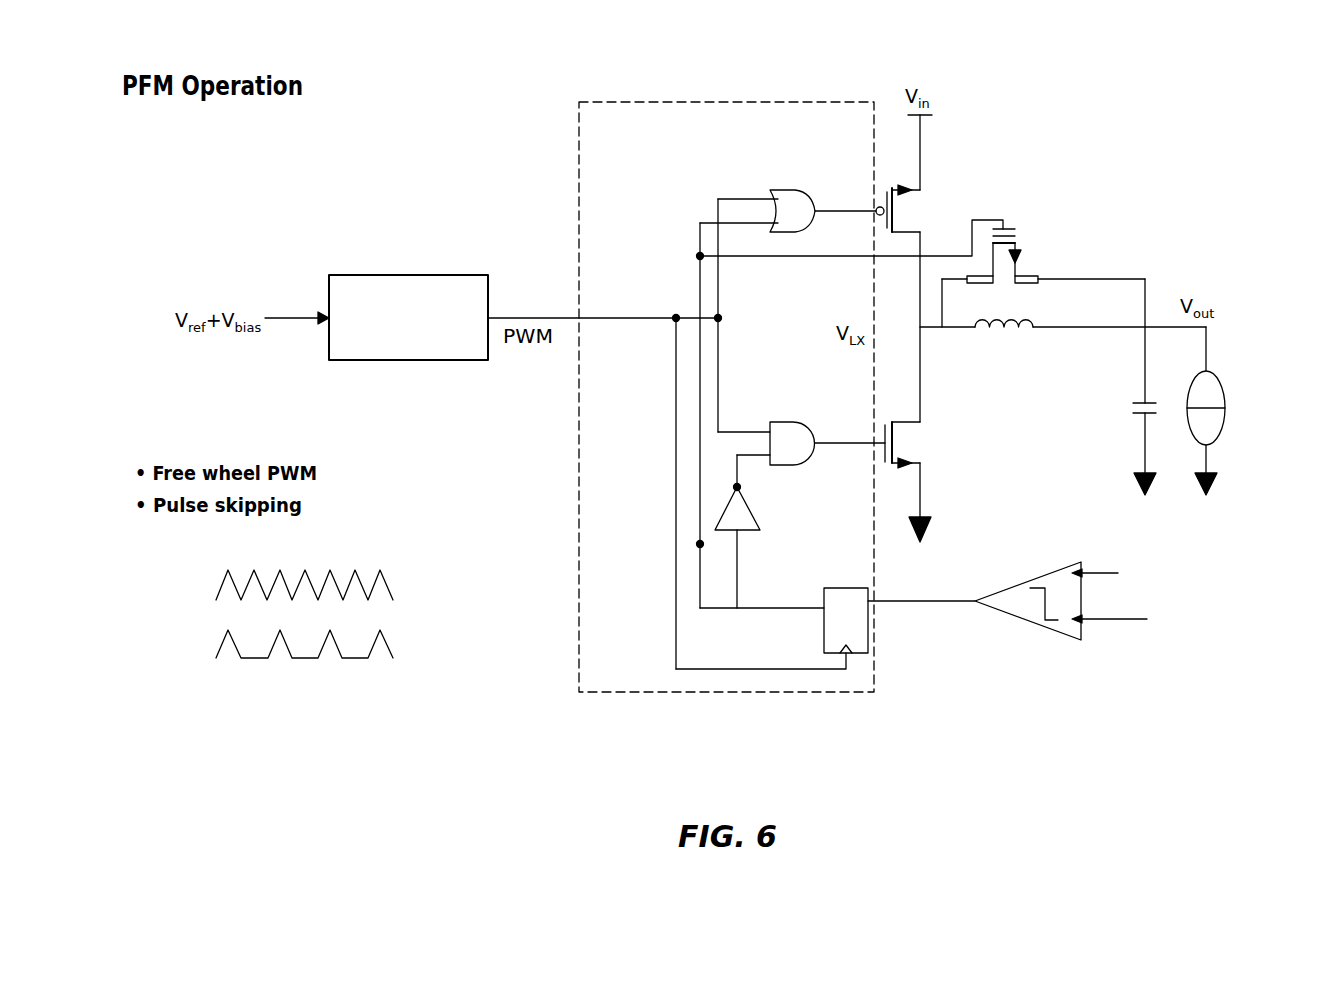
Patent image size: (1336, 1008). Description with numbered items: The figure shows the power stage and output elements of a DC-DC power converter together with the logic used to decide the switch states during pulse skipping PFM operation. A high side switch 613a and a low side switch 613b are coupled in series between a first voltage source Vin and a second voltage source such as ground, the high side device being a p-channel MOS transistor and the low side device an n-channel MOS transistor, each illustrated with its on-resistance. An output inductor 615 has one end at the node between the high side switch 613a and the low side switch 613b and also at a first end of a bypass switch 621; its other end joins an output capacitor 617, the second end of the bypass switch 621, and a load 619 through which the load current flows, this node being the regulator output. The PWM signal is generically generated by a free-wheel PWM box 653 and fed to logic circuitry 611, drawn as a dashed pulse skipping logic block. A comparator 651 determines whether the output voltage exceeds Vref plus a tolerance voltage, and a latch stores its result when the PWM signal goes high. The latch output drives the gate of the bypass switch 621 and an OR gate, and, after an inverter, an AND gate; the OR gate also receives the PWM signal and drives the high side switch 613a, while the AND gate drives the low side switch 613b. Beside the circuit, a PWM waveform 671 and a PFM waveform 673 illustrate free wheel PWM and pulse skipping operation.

The free-wheel PWM box 653 is at (408, 275).
The logic circuitry 611 is at (733, 693).
The high side switch 613a is at (920, 179).
The low side switch 613b is at (920, 423).
The bypass switch 621 is at (1010, 226).
The output inductor 615 is at (1003, 333).
The output capacitor 617 is at (1140, 400).
The load 619 is at (1222, 433).
The comparator 651 is at (1030, 625).
The PWM waveform 671 is at (408, 578).
The PFM waveform 673 is at (408, 636).